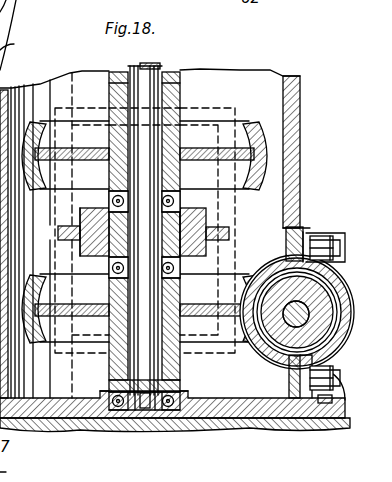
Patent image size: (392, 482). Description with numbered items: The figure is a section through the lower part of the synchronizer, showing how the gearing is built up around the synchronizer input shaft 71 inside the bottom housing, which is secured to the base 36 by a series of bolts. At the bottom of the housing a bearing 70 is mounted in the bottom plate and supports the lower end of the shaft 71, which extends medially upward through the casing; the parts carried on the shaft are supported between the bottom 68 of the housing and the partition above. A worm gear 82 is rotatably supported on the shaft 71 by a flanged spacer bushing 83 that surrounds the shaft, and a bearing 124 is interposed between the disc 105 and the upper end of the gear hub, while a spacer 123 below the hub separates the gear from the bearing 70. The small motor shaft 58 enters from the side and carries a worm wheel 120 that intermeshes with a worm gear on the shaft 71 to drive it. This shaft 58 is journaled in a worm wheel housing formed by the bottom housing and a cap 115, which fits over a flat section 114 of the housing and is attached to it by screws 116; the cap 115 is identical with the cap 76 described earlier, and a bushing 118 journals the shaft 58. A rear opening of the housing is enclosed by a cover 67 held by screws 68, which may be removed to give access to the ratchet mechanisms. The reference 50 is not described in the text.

The base 36 is at (262, 436).
The housing 50 is at (277, 60).
The small motor shaft 58 is at (296, 312).
The cover 67 is at (208, 108).
The screws 68 is at (68, 414).
The bearing 70 is at (162, 410).
The synchronizer input shaft 71 is at (150, 65).
The cap 76 is at (4, 472).
The worm gear 82 is at (285, 152).
The flanged spacer bushing 83 is at (184, 68).
The disc 105 is at (205, 216).
The flat section 114 is at (290, 374).
The cap 115 is at (345, 266).
The screws 116 is at (343, 238).
The bushing 118 is at (10, 44).
The worm wheel 120 is at (287, 345).
The spacer 123 is at (185, 388).
The bearing 124 is at (112, 266).